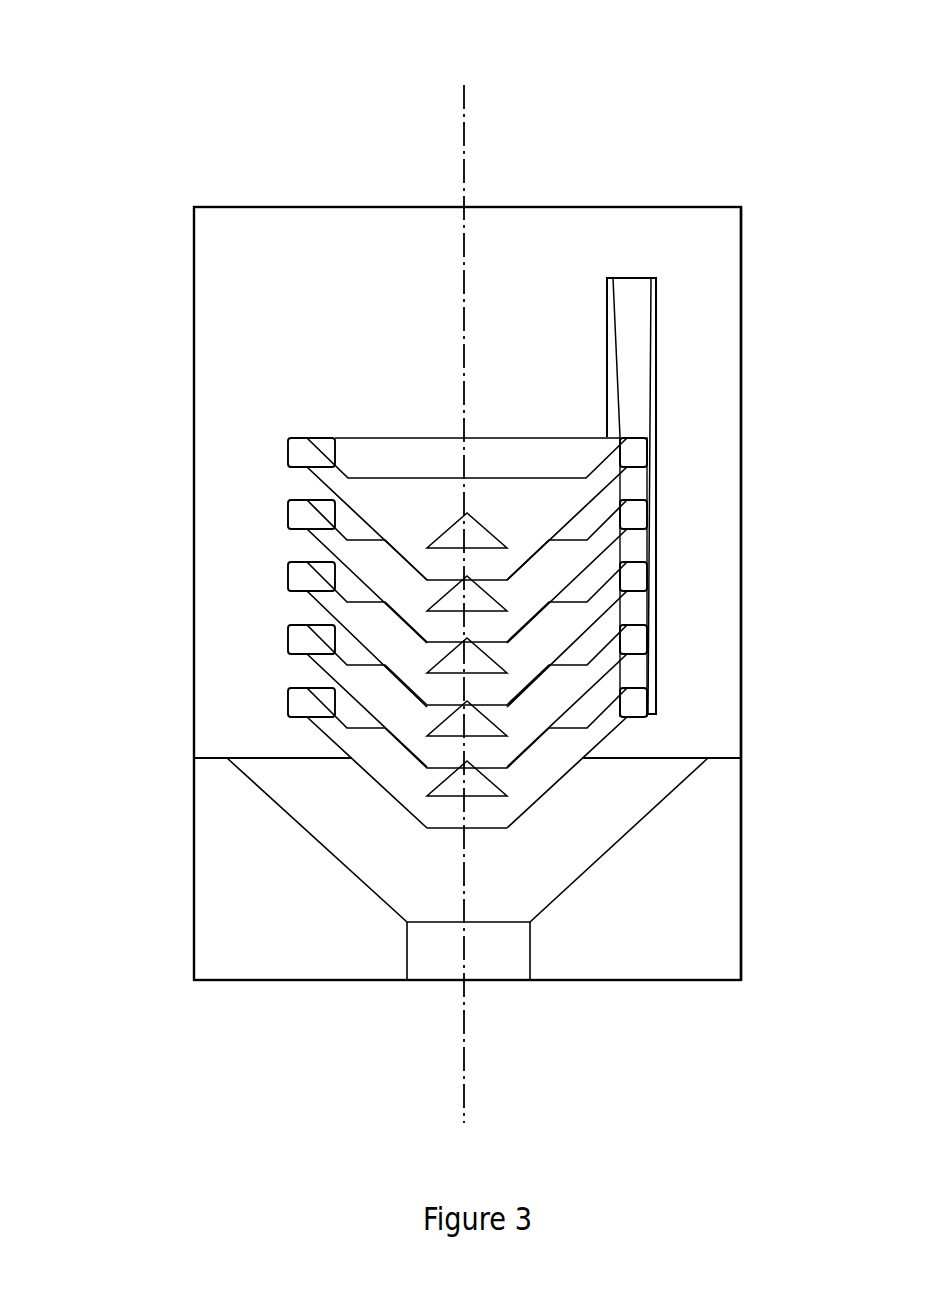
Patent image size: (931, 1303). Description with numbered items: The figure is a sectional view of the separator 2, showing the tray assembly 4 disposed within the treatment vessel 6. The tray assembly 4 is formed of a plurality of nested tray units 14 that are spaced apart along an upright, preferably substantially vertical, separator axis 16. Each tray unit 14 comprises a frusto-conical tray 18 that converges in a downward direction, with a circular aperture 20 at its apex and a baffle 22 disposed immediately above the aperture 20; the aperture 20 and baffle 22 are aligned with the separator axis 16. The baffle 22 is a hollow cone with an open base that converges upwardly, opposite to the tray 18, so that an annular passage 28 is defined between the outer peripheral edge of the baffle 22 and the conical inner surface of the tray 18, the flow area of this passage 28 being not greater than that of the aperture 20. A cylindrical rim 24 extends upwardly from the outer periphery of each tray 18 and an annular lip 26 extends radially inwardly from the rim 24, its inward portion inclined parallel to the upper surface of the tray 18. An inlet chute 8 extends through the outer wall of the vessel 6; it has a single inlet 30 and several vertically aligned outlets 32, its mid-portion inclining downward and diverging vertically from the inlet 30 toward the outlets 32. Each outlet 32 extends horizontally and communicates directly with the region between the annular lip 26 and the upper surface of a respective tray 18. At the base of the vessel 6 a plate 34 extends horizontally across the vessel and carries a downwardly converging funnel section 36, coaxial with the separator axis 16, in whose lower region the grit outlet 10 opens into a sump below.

The separator 2 is at (385, 160).
The tray assembly 4 is at (436, 466).
The treatment vessel 6 is at (742, 658).
The inlet chute 8 is at (632, 353).
The grit outlet 10 is at (437, 958).
The tray unit 14 is at (413, 488).
The separator axis 16 is at (465, 140).
The frusto-conical tray 18 is at (520, 568).
The circular aperture 20 is at (437, 580).
The baffle 22 is at (478, 538).
The cylindrical rim 24 is at (283, 455).
The annular lip 26 is at (328, 440).
The annular passage 28 is at (410, 550).
The inlet 30 is at (628, 288).
The outlets 32 is at (627, 448).
The plate 34 is at (710, 756).
The funnel section 36 is at (577, 870).